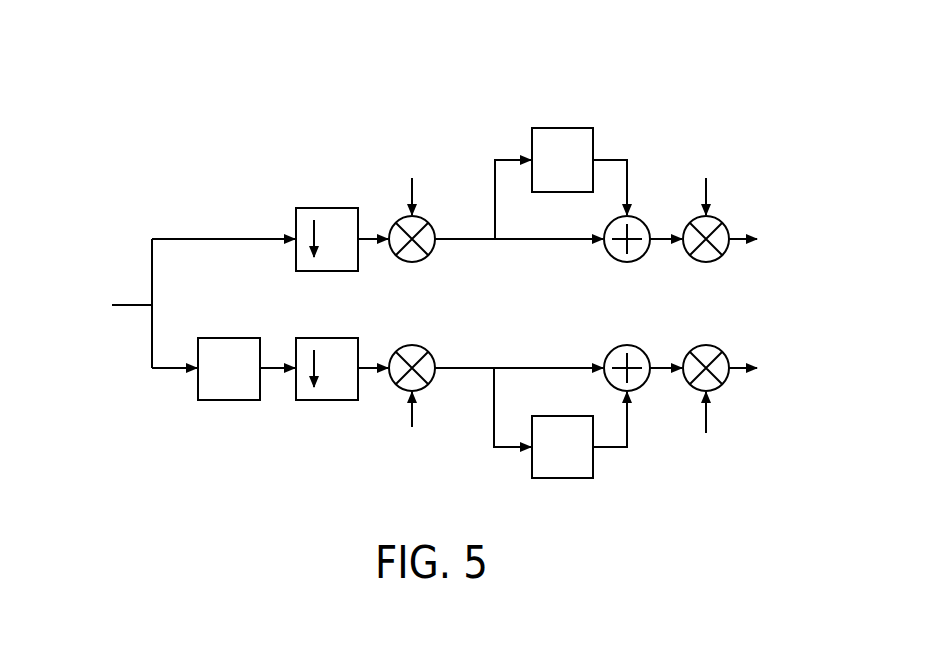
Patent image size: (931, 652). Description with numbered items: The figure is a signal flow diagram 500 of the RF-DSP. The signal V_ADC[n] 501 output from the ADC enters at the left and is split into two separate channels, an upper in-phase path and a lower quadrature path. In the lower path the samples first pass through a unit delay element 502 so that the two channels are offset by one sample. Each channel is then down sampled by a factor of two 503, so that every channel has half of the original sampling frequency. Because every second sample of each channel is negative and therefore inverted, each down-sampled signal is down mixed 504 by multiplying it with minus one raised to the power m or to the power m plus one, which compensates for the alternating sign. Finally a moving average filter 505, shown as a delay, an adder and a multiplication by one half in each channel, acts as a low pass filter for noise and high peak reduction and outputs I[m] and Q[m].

The signal flow diagram 500 is at (625, 100).
The signal V_ADC[n] 501 is at (74, 287).
The delay element z^-1 502 is at (230, 337).
The down sampling by a factor of two 503 is at (323, 272).
The down mixing 504 is at (412, 262).
The moving average filter 505 is at (758, 275).